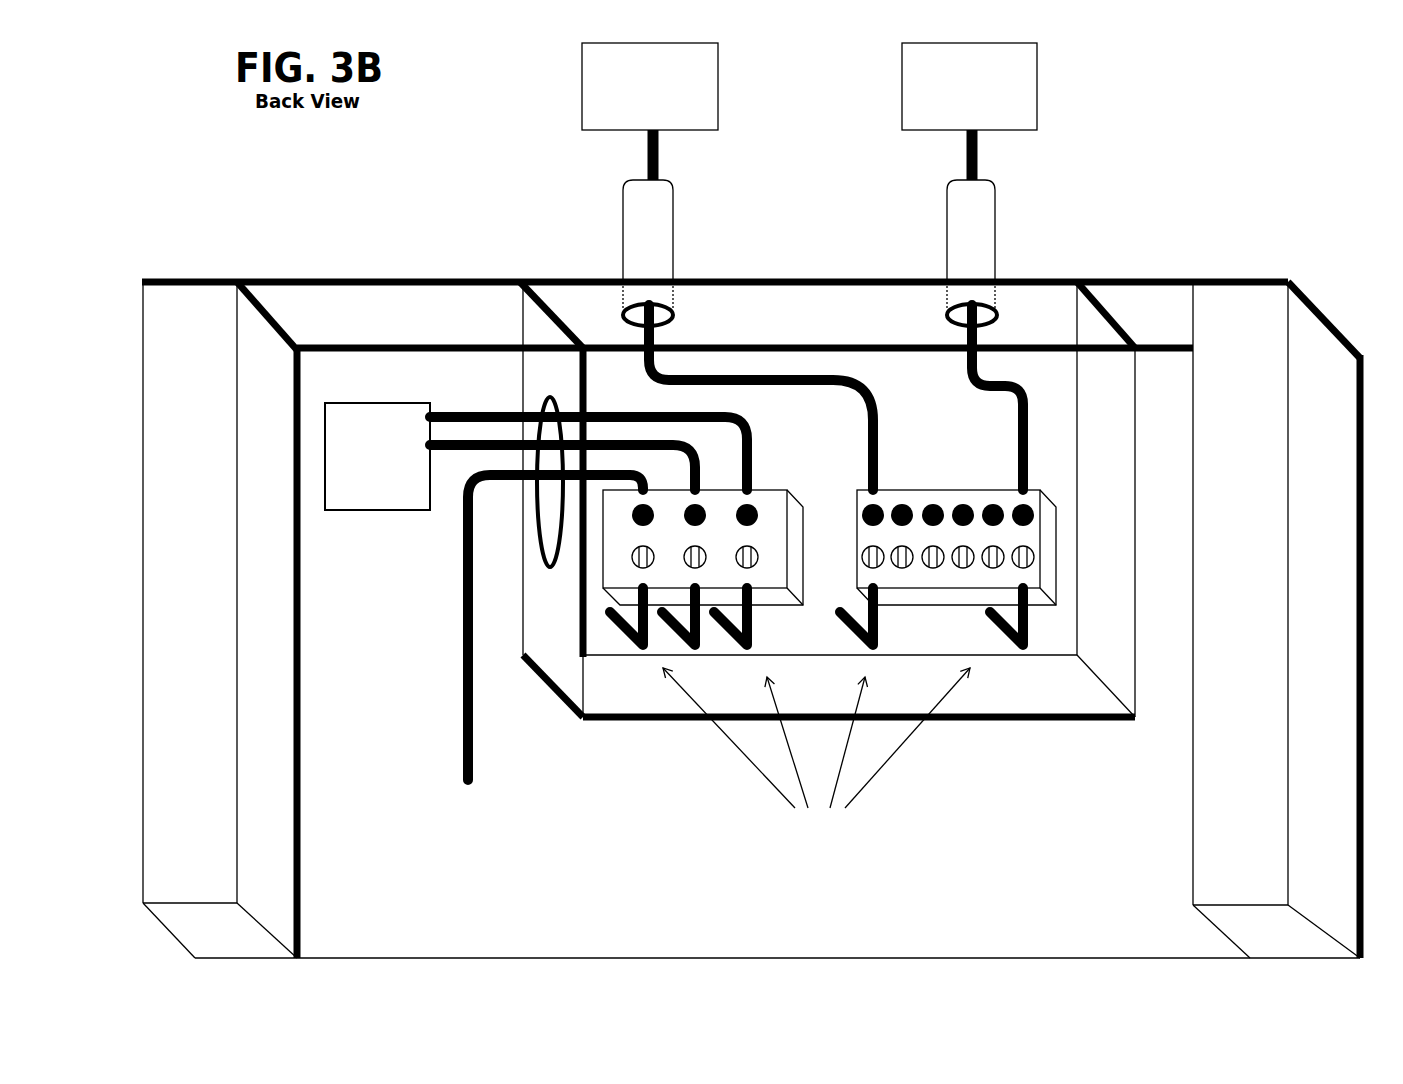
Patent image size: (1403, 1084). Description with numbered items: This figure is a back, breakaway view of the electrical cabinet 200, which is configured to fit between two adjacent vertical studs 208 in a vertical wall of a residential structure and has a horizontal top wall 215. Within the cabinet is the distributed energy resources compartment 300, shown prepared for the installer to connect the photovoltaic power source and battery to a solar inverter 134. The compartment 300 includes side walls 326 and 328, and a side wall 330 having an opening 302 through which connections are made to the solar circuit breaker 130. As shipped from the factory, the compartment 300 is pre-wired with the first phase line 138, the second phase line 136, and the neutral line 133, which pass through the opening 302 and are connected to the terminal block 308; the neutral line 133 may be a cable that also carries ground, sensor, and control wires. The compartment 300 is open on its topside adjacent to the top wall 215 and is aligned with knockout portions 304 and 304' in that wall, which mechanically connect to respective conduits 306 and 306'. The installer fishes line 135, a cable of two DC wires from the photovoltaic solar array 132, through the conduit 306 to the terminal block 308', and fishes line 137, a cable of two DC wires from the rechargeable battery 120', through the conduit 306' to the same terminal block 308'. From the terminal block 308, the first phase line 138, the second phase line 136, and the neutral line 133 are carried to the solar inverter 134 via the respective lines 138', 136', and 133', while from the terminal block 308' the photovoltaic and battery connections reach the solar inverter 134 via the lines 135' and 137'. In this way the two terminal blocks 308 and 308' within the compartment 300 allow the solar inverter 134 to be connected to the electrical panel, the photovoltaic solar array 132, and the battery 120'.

The horizontal top wall 215 is at (410, 275).
The vertical studs 208 is at (751, 620).
The distributed energy resources compartment 300 is at (1102, 365).
The side wall 330 is at (528, 640).
The side wall 328 is at (1050, 698).
The side wall 326 is at (1110, 660).
The solar circuit breaker 130 is at (377, 456).
The phase L1 line 138 is at (603, 439).
The phase L2 line 136 is at (575, 467).
The neutral line 133 is at (541, 620).
The opening 302 is at (557, 565).
The rechargeable battery 120' is at (650, 86).
The photovoltaic solar array 132 is at (969, 86).
The line 137 is at (761, 310).
The line 135 is at (1000, 310).
The conduit 306' is at (622, 244).
The conduit 306 is at (950, 244).
The knockout portion 304' is at (626, 323).
The knockout portion 304 is at (950, 317).
The terminal block 308 is at (714, 533).
The terminal block 308' is at (965, 533).
The line 133' is at (619, 621).
The line 136' is at (697, 621).
The line 138' is at (758, 621).
The line 137' is at (882, 616).
The line 135' is at (1032, 616).
The solar inverter 134 is at (816, 783).
The electrical cabinet 200 is at (425, 842).